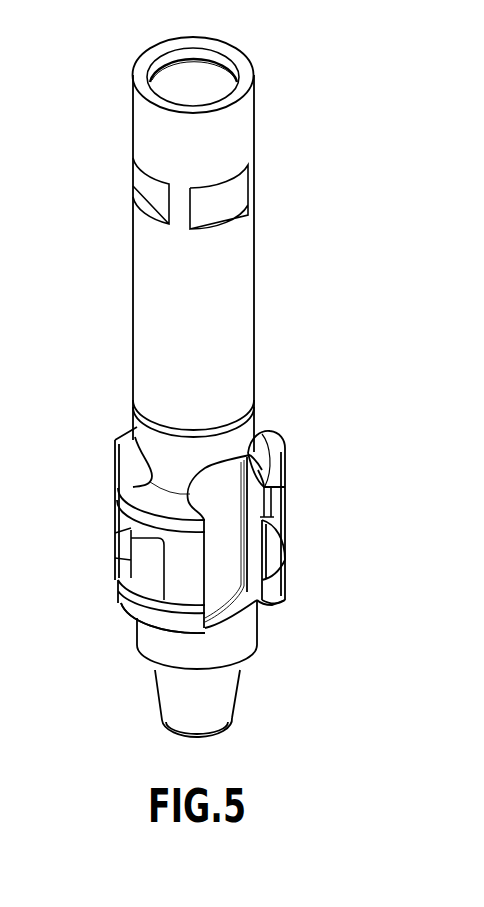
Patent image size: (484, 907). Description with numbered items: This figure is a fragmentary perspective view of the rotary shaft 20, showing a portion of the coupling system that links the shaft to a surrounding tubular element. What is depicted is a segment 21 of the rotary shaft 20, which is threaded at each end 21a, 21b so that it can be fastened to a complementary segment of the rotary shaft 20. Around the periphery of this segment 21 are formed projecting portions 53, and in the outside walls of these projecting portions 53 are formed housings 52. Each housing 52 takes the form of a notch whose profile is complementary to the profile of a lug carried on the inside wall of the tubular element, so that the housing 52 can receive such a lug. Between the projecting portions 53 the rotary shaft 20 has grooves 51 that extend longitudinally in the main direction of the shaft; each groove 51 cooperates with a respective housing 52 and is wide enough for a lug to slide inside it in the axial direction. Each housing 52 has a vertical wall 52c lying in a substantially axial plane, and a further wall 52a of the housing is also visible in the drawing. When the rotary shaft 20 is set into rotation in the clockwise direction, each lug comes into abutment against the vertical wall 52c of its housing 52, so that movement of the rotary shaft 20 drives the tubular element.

The rotary shaft 20 is at (192, 373).
The segment of the rotary shaft 21 is at (169, 373).
The threaded end 21a is at (210, 77).
The threaded end 21b is at (235, 697).
The groove 51 is at (223, 490).
The housing 52 is at (148, 555).
The collar flange 52a is at (140, 598).
The vertical wall 52c is at (276, 520).
The projecting portion 53 is at (270, 448).